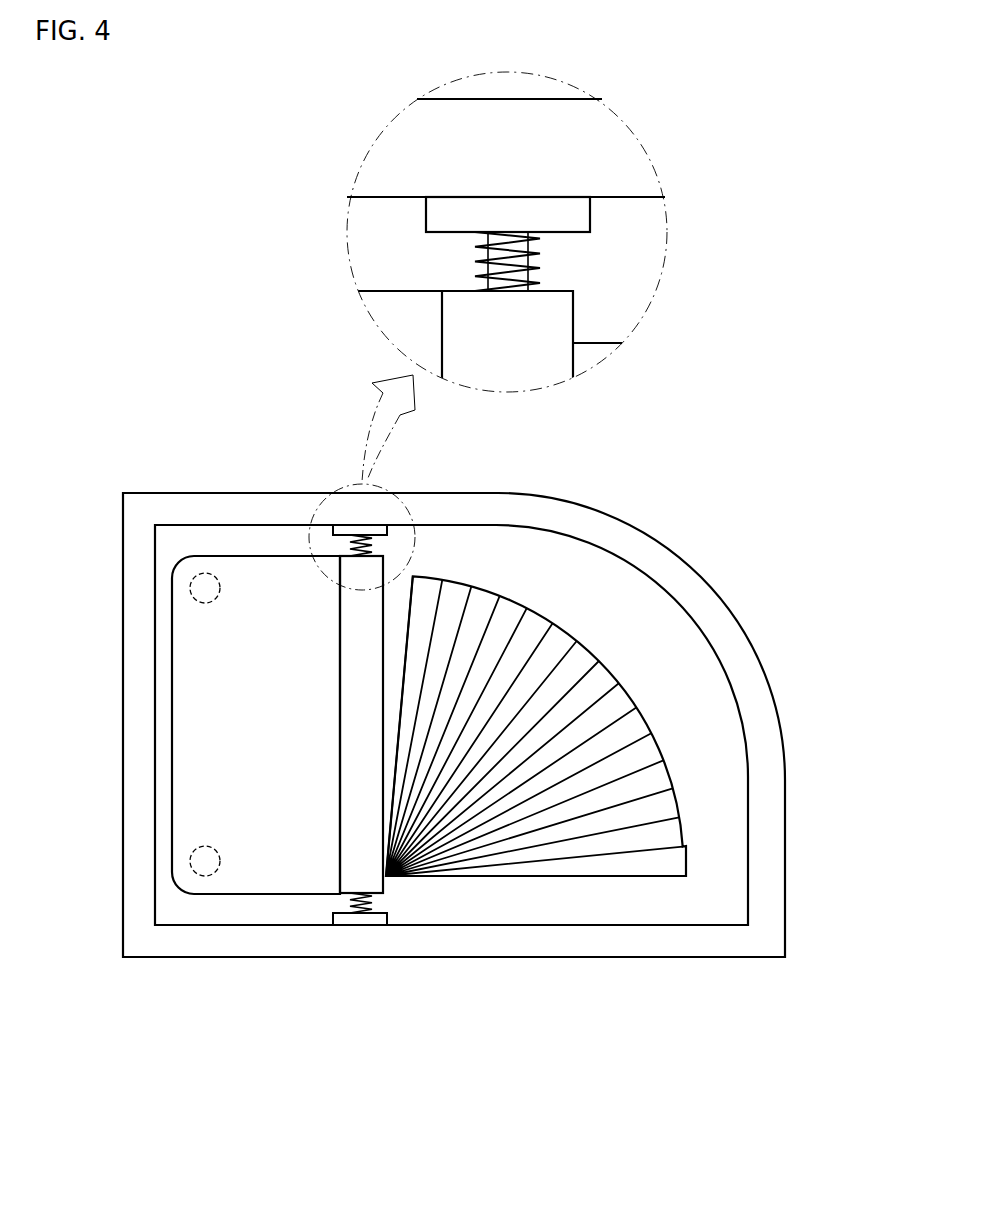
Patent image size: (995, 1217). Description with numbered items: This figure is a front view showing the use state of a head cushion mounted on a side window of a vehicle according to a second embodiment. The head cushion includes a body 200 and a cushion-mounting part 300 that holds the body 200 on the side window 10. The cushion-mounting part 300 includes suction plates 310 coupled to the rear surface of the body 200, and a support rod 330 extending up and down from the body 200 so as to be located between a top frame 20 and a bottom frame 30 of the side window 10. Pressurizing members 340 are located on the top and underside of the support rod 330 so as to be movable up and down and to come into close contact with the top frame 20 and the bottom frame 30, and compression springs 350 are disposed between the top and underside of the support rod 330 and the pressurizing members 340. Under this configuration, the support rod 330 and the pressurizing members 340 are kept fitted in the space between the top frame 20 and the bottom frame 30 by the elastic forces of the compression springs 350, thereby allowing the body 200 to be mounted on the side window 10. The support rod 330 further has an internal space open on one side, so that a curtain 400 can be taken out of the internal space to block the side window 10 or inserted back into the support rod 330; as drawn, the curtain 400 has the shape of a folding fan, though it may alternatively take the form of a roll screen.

The side window 10 is at (638, 602).
The top frame 20 is at (272, 502).
The bottom frame 30 is at (448, 945).
The body 200 is at (218, 545).
The cushion-mounting part 300 is at (388, 547).
The suction plates 310 is at (190, 588).
The support rod 330 is at (565, 310).
The pressurizing members 340 is at (585, 214).
The compression springs 350 is at (542, 250).
The curtain 400 is at (618, 670).